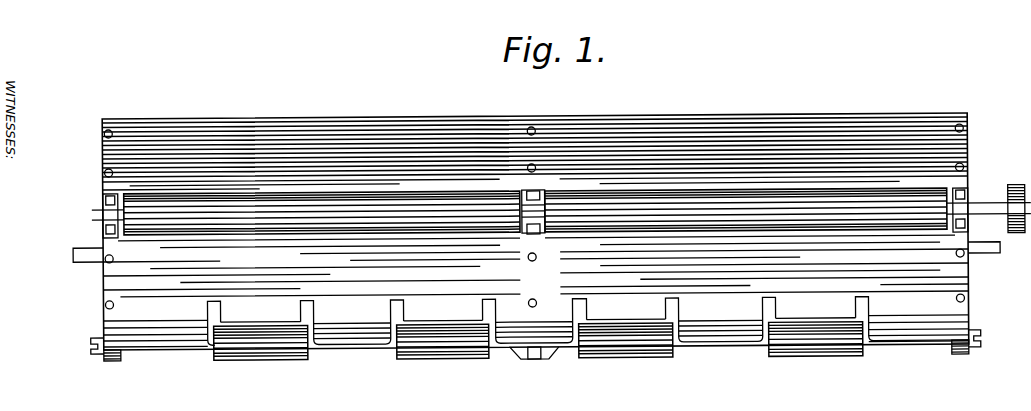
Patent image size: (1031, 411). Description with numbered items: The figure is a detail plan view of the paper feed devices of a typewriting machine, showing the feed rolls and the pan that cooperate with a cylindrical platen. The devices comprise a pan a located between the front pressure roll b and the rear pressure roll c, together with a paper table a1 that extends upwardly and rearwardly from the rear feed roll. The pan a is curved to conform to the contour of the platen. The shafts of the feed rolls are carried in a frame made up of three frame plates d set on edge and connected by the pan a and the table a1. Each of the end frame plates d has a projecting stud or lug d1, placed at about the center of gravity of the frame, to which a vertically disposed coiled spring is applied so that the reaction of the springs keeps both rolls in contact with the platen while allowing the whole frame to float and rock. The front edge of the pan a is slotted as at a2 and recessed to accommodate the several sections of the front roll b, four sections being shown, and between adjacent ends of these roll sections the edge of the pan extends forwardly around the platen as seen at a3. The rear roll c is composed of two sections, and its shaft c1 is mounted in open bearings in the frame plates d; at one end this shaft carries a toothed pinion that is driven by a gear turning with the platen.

The pan a is at (978, 292).
The paper table a1 is at (984, 140).
The slot a2 is at (578, 312).
The forwardly extending pan edge a3 is at (735, 370).
The front pressure roll b is at (268, 345).
The rear pressure roll c is at (400, 210).
The shaft of rear feed roll c1 is at (535, 235).
The frame plates d is at (104, 206).
The projecting stud or lug d1 is at (1006, 270).